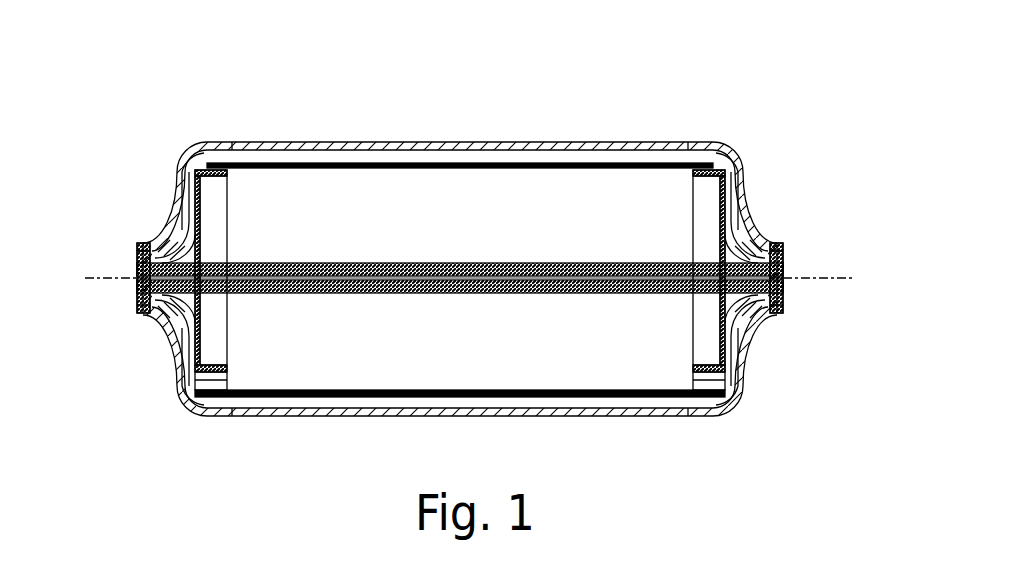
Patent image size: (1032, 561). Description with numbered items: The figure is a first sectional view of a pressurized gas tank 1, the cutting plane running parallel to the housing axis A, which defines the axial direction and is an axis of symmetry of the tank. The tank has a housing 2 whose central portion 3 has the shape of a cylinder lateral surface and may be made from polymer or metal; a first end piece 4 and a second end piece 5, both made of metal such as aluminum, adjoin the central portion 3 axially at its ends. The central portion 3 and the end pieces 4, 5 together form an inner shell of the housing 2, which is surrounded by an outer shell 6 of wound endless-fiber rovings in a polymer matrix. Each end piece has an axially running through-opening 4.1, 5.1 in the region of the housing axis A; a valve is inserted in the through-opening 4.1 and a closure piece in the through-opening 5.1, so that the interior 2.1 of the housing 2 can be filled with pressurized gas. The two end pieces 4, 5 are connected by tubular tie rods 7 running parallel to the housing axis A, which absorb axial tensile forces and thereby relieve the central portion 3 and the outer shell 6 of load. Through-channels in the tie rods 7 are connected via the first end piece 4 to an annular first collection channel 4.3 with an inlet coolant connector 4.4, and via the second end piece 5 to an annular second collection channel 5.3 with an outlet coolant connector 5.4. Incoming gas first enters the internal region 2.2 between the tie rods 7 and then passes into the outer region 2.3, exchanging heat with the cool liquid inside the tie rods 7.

The pressurized gas tank 1 is at (275, 98).
The housing 2 is at (597, 165).
The interior 2.1 is at (560, 358).
The internal region 2.2 is at (470, 258).
The outer region 2.3 is at (519, 195).
The central portion 3 is at (410, 153).
The first end piece 4 is at (758, 238).
The through-opening 4.1 is at (792, 264).
The first collection channel 4.3 is at (792, 294).
The inlet coolant connector 4.4 is at (779, 243).
The second end piece 5 is at (170, 230).
The through-opening 5.1 is at (128, 272).
The second collection channel 5.3 is at (128, 291).
The outlet coolant connector 5.4 is at (139, 240).
The outer shell 6 is at (733, 157).
The tie rod 7 is at (378, 262).
The housing axis A is at (853, 278).